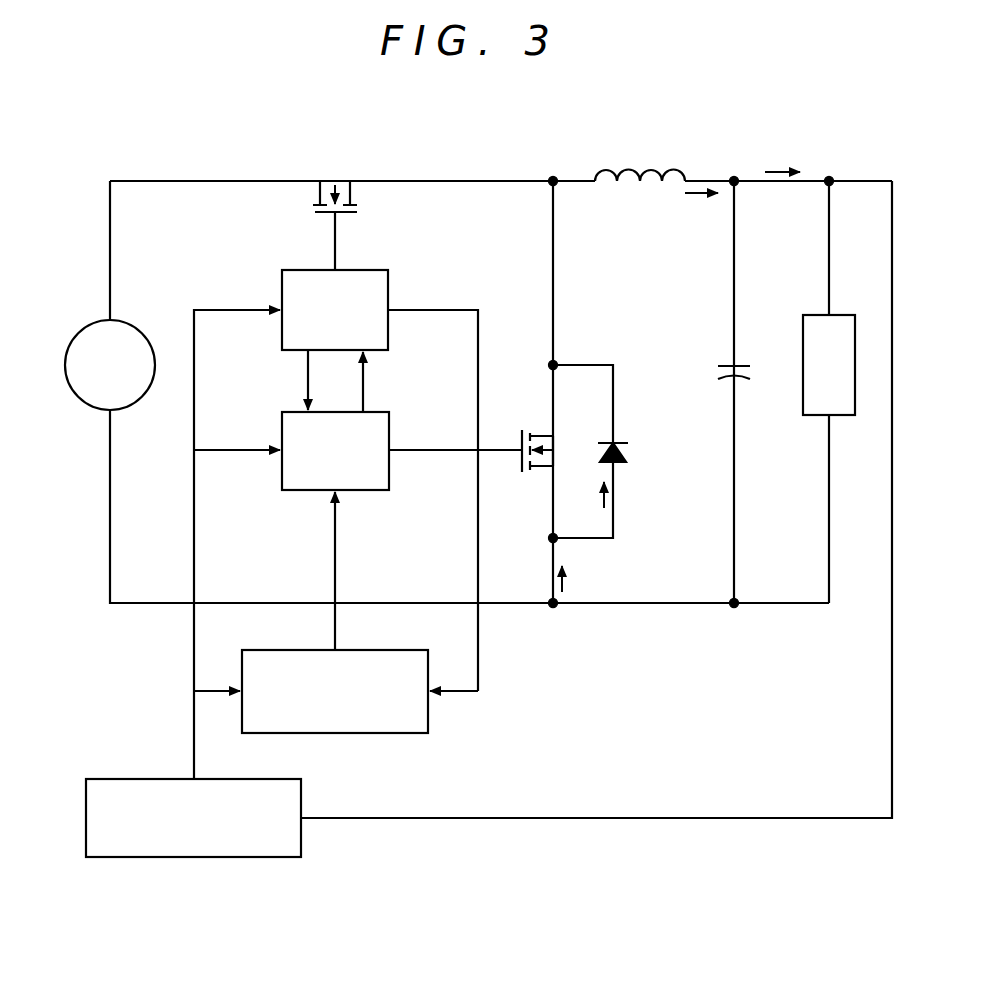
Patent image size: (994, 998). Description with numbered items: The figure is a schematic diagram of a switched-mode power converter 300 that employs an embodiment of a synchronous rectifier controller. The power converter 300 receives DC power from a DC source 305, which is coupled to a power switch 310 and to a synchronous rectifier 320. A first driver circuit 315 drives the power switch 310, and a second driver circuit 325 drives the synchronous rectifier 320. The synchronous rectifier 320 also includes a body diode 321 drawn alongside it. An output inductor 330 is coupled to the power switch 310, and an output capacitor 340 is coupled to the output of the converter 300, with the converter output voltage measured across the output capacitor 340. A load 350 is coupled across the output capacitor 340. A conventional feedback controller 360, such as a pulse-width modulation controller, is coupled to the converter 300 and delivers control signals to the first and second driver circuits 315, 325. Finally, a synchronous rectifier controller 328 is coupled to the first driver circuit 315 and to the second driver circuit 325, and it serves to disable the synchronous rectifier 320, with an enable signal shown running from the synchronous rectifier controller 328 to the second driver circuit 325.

The switched-mode power converter 300 is at (152, 128).
The DC source 305 is at (68, 350).
The power switch 310 is at (318, 207).
The first driver circuit 315 is at (370, 270).
The synchronous rectifier 320 is at (540, 433).
The body diode 321 is at (598, 451).
The second driver circuit 325 is at (372, 492).
The synchronous rectifier controller 328 is at (428, 713).
The output inductor 330 is at (676, 170).
The output capacitor 340 is at (720, 368).
The load 350 is at (803, 410).
The feedback controller 360 is at (303, 842).